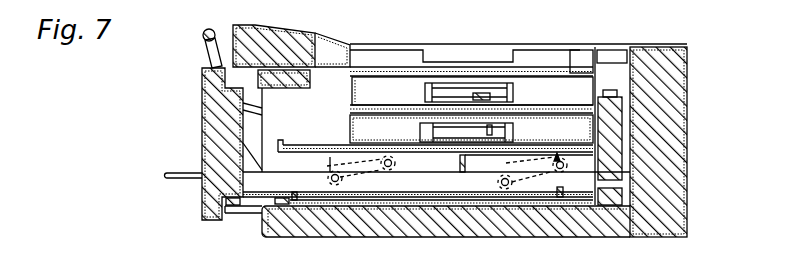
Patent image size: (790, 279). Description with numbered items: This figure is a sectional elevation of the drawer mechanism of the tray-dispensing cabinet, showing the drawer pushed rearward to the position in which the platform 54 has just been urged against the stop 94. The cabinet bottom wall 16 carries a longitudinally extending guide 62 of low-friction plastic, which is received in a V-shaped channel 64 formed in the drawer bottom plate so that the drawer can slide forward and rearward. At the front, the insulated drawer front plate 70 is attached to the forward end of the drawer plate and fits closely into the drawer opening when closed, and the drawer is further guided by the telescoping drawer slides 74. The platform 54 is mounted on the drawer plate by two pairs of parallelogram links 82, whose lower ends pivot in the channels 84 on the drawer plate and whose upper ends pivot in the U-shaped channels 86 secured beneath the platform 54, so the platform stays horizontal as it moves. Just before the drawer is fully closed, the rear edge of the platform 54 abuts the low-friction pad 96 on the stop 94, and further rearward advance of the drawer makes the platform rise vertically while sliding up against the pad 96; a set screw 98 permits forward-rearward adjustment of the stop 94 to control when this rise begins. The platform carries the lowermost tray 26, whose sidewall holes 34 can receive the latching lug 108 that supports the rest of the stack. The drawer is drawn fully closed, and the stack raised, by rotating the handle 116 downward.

The handle 116 is at (202, 38).
The drawer front plate 70 is at (199, 203).
The telescoping drawer slides 74 is at (243, 219).
The tray 26 is at (527, 94).
The pad 96 is at (588, 103).
The holes 34 is at (418, 118).
The latching lug 108 is at (455, 91).
The set screw 98 is at (590, 129).
The platform 54 is at (410, 156).
The parallelogram links 82 is at (432, 171).
The U-shaped channels 86 is at (436, 162).
The channels 84 is at (452, 182).
The guide 62 is at (288, 205).
The V-shaped channel 64 is at (325, 184).
The bottom wall 16 is at (527, 241).
The stop 94 is at (600, 184).